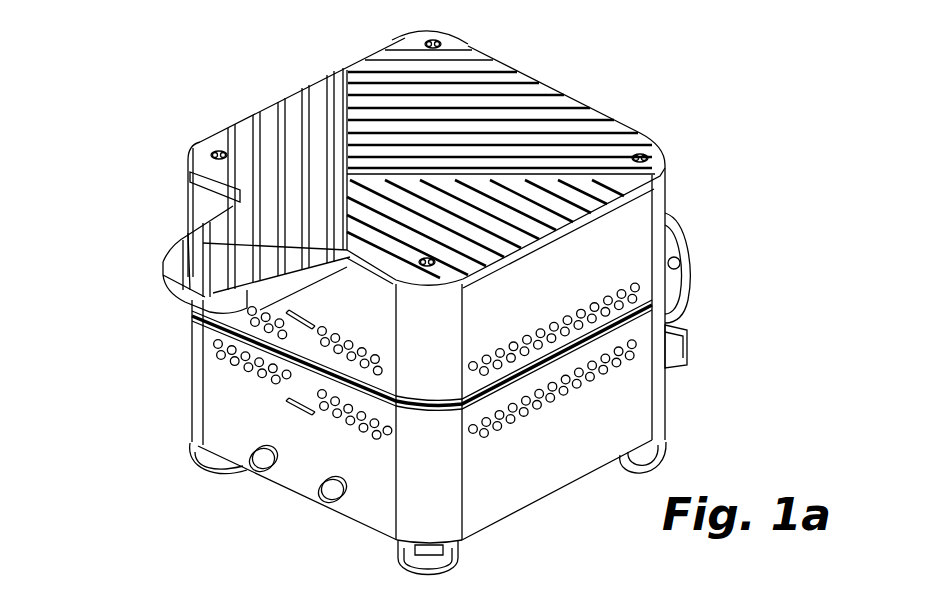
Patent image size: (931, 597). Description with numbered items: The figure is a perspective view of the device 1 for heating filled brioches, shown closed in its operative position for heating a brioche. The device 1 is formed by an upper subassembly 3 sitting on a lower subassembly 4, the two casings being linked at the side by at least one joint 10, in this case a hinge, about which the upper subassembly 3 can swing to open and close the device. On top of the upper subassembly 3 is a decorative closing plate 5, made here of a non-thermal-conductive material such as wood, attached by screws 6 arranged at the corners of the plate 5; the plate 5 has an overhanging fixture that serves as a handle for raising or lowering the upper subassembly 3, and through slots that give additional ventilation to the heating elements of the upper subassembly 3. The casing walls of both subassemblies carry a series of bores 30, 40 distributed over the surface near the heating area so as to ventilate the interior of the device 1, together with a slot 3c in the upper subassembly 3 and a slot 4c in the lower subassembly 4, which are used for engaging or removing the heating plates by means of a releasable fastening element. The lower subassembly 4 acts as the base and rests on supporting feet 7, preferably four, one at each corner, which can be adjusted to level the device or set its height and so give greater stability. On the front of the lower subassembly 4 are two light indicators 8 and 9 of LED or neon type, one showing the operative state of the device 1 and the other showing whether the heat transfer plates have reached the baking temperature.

The device 1 is at (115, 92).
The upper subassembly 3 is at (652, 238).
The slot 3c is at (328, 325).
The lower subassembly 4 is at (640, 398).
The slot 4c is at (272, 411).
The decorative closing plate 5 is at (320, 105).
The screws 6 is at (646, 157).
The supporting feet 7 is at (666, 462).
The light indicator 8 is at (262, 470).
The light indicator 9 is at (322, 502).
The joint 10 is at (712, 244).
The bores 30 is at (522, 332).
The bores 40 is at (535, 405).